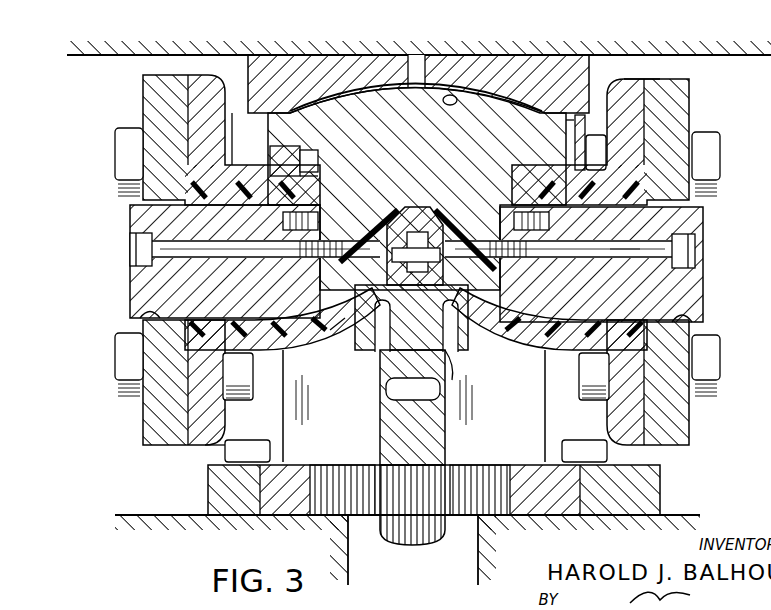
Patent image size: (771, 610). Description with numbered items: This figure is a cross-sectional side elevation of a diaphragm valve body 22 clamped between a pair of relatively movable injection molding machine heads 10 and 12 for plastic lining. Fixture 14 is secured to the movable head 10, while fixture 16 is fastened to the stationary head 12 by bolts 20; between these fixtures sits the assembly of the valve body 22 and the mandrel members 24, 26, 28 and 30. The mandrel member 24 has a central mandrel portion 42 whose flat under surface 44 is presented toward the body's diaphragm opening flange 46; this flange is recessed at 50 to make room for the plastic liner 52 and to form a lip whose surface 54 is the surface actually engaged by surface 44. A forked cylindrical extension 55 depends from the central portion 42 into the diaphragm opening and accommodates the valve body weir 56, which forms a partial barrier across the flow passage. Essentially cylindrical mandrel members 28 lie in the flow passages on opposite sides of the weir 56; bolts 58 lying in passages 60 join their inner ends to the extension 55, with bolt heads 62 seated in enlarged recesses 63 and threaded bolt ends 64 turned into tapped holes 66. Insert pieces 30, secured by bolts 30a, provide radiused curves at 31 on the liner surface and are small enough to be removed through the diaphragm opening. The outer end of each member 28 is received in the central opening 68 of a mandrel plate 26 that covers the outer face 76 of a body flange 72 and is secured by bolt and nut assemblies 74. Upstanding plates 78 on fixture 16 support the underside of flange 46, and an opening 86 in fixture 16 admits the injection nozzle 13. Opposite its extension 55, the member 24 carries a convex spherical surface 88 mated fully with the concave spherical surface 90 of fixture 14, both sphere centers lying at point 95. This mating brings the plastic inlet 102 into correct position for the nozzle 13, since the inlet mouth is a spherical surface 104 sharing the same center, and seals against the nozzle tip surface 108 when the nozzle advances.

The machine head 10 is at (97, 56).
The machine head 12 is at (146, 515).
The injection nozzle 13 is at (380, 420).
The fixture 14 is at (475, 62).
The fixture 16 is at (638, 484).
The bolts 20 is at (283, 430).
The valve body 22 is at (268, 348).
The mandrel member 24 is at (586, 128).
The mandrel plate 26 is at (143, 107).
The mandrel members 28 is at (130, 289).
The insert pieces 30 is at (290, 258).
The bolts 30a is at (283, 222).
The radiused curves 31 is at (320, 198).
The central mandrel portion 42 is at (406, 165).
The under surface 44 is at (234, 130).
The diaphragm opening flange 46 is at (280, 150).
The recess 50 is at (306, 152).
The plastic liner 52 is at (316, 178).
The lip surface 54 is at (570, 126).
The forked cylindrical extension 55 is at (448, 306).
The weir 56 is at (380, 306).
The bolts 58 is at (146, 240).
The passages 60 is at (620, 258).
The bolt heads 62 is at (696, 243).
The enlarged recesses 63 is at (697, 256).
The threaded bolt ends 64 is at (505, 225).
The tapped holes 66 is at (334, 332).
The central opening 68 is at (150, 314).
The body flange 72 is at (205, 446).
The bolt and nut assemblies 74 is at (706, 138).
The outer faces 76 is at (190, 408).
The upstanding plates 78 is at (486, 397).
The opening 86 is at (508, 468).
The convex spherical surface 88 is at (520, 93).
The concave spherical surface 90 is at (449, 96).
The sphere center 95 is at (447, 380).
The plastic inlet 102 is at (380, 364).
The spherical surface 104 is at (386, 390).
The nozzle tip surface 108 is at (452, 350).